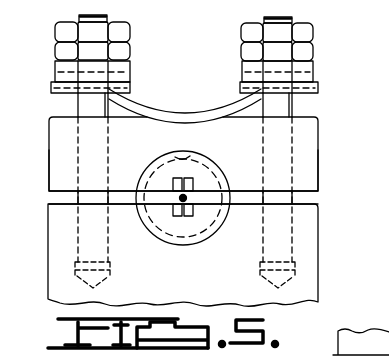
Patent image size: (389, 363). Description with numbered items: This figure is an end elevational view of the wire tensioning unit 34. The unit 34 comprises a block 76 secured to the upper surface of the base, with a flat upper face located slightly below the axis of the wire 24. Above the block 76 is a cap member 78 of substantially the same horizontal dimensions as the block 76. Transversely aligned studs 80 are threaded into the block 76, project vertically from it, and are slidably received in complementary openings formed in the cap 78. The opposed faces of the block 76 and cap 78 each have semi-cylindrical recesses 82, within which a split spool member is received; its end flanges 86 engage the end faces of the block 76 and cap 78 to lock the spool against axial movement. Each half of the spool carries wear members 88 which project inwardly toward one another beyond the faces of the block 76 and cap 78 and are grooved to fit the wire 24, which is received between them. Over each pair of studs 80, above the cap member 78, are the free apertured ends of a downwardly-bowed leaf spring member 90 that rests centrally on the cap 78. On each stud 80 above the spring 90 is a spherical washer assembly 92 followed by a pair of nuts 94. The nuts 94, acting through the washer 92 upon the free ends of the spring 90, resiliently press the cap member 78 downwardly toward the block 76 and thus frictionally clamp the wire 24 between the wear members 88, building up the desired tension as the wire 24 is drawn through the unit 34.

The wire 24 is at (180, 196).
The unit 34 is at (326, 143).
The block 76 is at (305, 288).
The cap member 78 is at (320, 172).
The studs 80 is at (77, 98).
The semi-cylindrical recesses 82 is at (192, 150).
The end flanges 86 is at (222, 213).
The wear members 88 is at (190, 182).
The leaf spring member 90 is at (140, 105).
The spherical washer assembly 92 is at (132, 74).
The nuts 94 is at (128, 53).